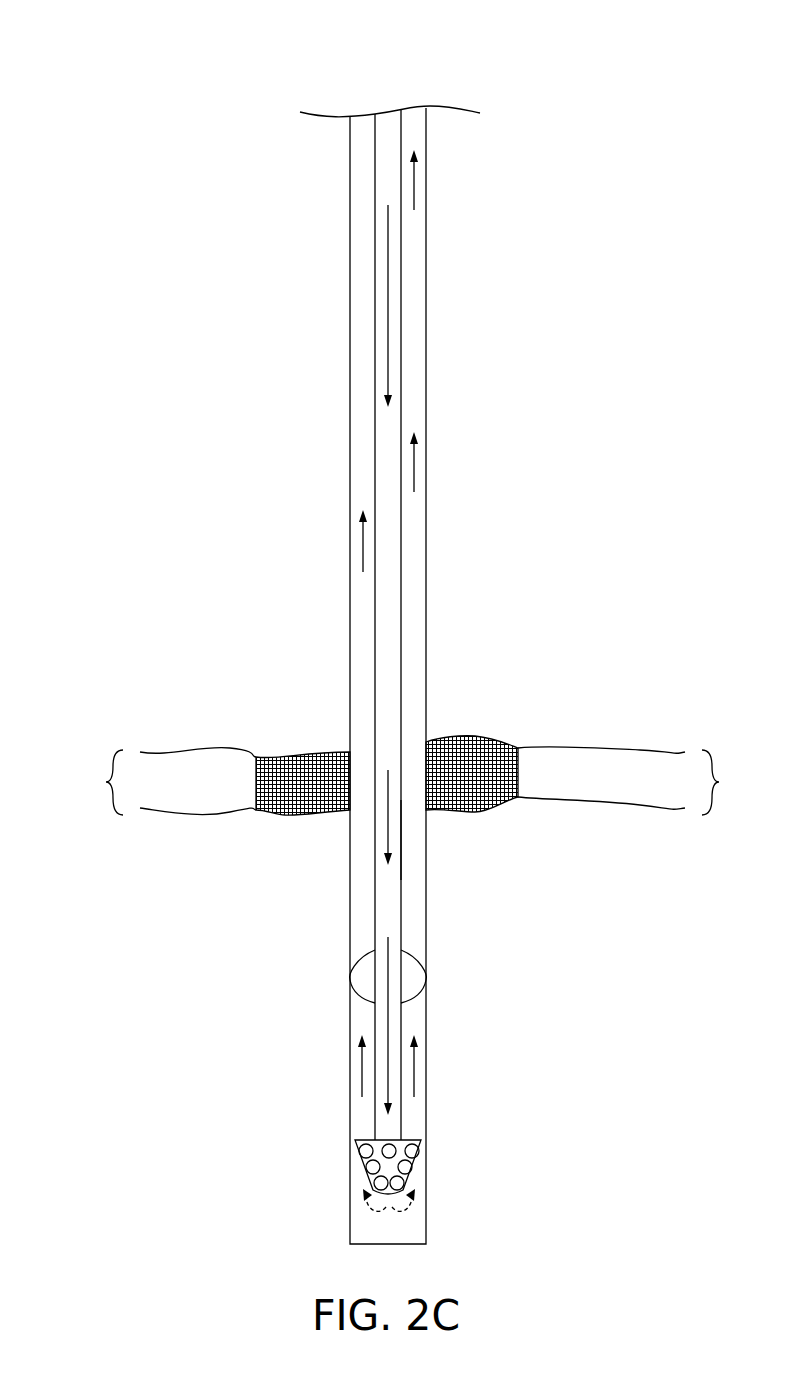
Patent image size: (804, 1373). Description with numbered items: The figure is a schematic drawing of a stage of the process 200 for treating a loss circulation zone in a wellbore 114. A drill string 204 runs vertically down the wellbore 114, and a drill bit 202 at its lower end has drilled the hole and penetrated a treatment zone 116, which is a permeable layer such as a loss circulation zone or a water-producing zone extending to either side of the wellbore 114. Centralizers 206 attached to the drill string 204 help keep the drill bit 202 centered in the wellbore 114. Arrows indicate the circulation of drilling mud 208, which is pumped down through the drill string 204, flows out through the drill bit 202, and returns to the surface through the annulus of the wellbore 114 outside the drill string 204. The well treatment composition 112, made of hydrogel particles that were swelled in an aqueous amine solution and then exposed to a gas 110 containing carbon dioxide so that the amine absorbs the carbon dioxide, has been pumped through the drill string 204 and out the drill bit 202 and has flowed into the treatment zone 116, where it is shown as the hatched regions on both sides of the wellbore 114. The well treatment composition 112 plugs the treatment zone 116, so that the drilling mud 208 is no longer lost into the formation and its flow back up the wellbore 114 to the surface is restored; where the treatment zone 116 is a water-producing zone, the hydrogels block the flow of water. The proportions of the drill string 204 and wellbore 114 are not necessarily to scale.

The process 200 is at (620, 80).
The wellbore 114 is at (427, 556).
The drill string 204 is at (402, 672).
The gas 110 is at (402, 836).
The treatment zone 116 is at (416, 781).
The well treatment composition 112 is at (308, 755).
The centralizers 206 is at (362, 963).
The drill bit 202 is at (368, 1160).
The drilling mud 208 is at (415, 187).